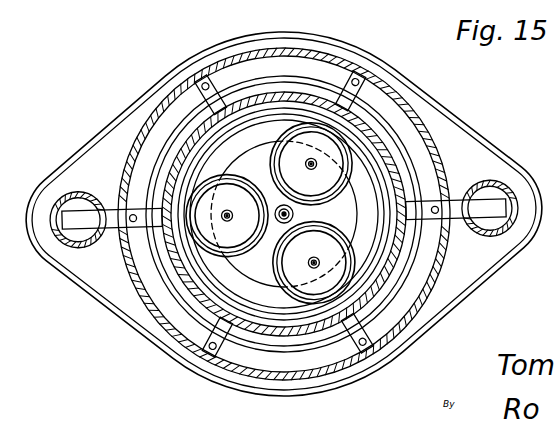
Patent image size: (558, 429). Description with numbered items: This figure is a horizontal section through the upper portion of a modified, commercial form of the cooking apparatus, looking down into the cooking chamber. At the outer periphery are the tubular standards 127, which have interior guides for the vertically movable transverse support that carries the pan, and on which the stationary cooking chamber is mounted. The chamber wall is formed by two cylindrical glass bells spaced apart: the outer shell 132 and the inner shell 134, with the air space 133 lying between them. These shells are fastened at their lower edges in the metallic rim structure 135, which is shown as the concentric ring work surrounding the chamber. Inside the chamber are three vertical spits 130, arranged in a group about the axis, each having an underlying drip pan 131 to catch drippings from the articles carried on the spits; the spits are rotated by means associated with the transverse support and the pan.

The tubular standards 127 is at (60, 203).
The vertical spits 130 is at (318, 161).
The drip pan 131 is at (345, 154).
The outer shell 132 is at (392, 97).
The air space 133 is at (358, 79).
The inner shell 134 is at (247, 100).
The rim structure 135 is at (155, 109).